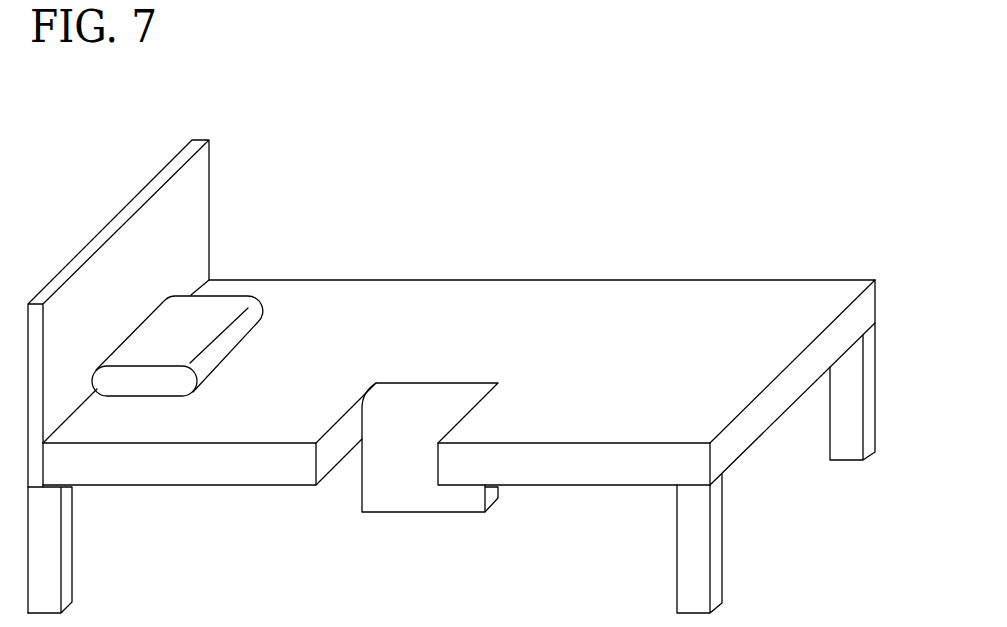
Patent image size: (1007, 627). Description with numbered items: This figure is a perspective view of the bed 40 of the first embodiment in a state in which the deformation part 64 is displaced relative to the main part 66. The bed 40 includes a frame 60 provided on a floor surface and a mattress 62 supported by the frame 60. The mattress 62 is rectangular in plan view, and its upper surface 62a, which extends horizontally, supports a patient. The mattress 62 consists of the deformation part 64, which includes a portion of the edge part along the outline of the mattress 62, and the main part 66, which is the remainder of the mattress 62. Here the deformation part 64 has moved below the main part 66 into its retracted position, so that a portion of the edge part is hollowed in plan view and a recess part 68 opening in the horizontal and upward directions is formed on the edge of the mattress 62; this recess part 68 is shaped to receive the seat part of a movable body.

The bed 40 is at (678, 191).
The frame 60 is at (67, 547).
The mattress 62 is at (389, 281).
The upper surface 62a is at (483, 308).
The main part 66 is at (260, 425).
The recess part 68 is at (340, 440).
The deformation part 64 is at (412, 480).